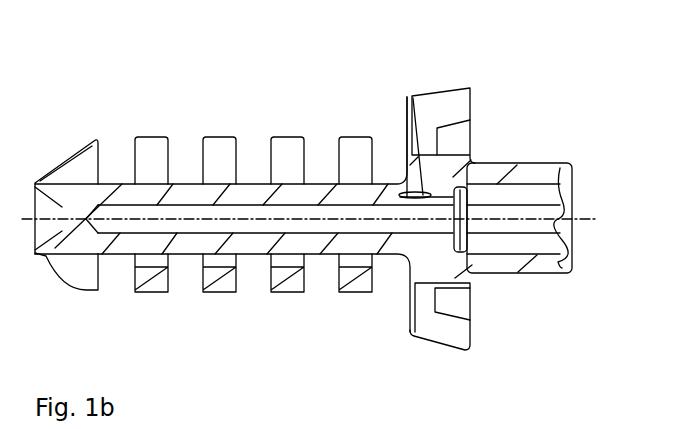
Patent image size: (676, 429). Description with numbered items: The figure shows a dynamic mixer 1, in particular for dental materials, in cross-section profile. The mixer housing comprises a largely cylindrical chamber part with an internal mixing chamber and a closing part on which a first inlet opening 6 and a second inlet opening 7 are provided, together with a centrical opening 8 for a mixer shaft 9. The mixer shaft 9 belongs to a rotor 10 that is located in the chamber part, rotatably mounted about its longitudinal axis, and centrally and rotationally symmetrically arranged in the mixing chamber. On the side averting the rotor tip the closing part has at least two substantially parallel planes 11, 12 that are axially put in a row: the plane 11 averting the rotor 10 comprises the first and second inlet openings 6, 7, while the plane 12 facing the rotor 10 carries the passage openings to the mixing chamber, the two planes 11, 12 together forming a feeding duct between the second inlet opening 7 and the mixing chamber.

The dynamic mixer 1 is at (79, 39).
The first inlet opening 6 is at (470, 297).
The second inlet opening 7 is at (468, 143).
The centrical opening 8 is at (573, 223).
The mixer shaft 9 is at (538, 197).
The rotor 10 is at (225, 207).
The plane averting the rotor 11 is at (470, 288).
The plane facing the rotor 12 is at (445, 238).